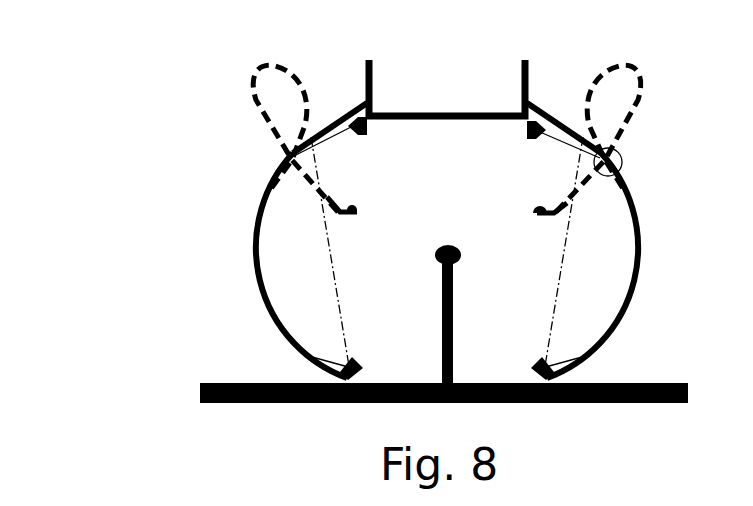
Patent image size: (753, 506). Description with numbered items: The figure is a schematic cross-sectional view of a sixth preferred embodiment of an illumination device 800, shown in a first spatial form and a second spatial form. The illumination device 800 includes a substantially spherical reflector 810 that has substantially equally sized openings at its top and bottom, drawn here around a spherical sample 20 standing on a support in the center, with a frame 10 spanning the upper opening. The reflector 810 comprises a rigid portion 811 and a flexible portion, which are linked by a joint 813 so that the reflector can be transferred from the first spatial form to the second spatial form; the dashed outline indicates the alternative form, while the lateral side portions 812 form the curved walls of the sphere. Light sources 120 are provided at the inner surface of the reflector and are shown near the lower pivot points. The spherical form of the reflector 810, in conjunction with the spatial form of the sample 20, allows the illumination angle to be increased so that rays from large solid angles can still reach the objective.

The illumination device 800 is at (131, 77).
The frame 10 is at (483, 77).
The rigid portion 811 is at (535, 105).
The lateral side portion 812 is at (638, 260).
The reflector 810 is at (656, 186).
The joint 813 is at (618, 152).
The spherical sample 20 is at (450, 248).
The light source 120 is at (355, 358).